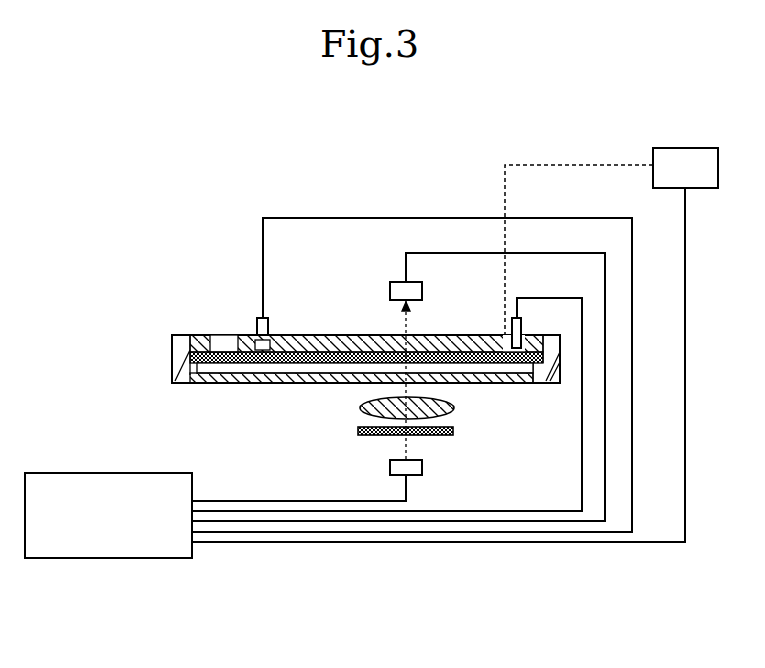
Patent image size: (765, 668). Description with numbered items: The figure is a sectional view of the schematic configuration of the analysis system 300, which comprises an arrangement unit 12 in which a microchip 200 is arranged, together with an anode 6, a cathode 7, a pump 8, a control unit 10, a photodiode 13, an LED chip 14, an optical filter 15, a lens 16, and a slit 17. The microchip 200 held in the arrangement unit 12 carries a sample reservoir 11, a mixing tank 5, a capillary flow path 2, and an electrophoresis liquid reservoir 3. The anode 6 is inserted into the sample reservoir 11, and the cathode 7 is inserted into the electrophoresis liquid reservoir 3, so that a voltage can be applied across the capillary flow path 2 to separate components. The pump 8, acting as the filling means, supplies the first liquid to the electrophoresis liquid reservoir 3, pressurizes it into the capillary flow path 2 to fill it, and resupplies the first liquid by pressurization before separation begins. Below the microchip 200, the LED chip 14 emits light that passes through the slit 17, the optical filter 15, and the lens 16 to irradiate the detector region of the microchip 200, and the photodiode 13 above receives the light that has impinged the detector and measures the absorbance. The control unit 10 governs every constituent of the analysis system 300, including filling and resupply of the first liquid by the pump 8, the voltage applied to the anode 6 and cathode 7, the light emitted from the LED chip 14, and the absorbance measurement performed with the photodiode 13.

The analysis system 300 is at (335, 173).
The microchip 200 is at (198, 348).
The arrangement unit 12 is at (172, 362).
The sample reservoir 11 is at (250, 334).
The mixing tank 5 is at (218, 371).
The capillary flow path 2 is at (280, 369).
The anode 6 is at (270, 321).
The electrophoresis liquid reservoir 3 is at (520, 324).
The cathode 7 is at (508, 329).
The pump 8 is at (688, 148).
The control unit 10 is at (95, 560).
The photodiode 13 is at (392, 285).
The LED chip 14 is at (424, 472).
The optical filter 15 is at (455, 433).
The lens 16 is at (454, 406).
The slit 17 is at (358, 378).